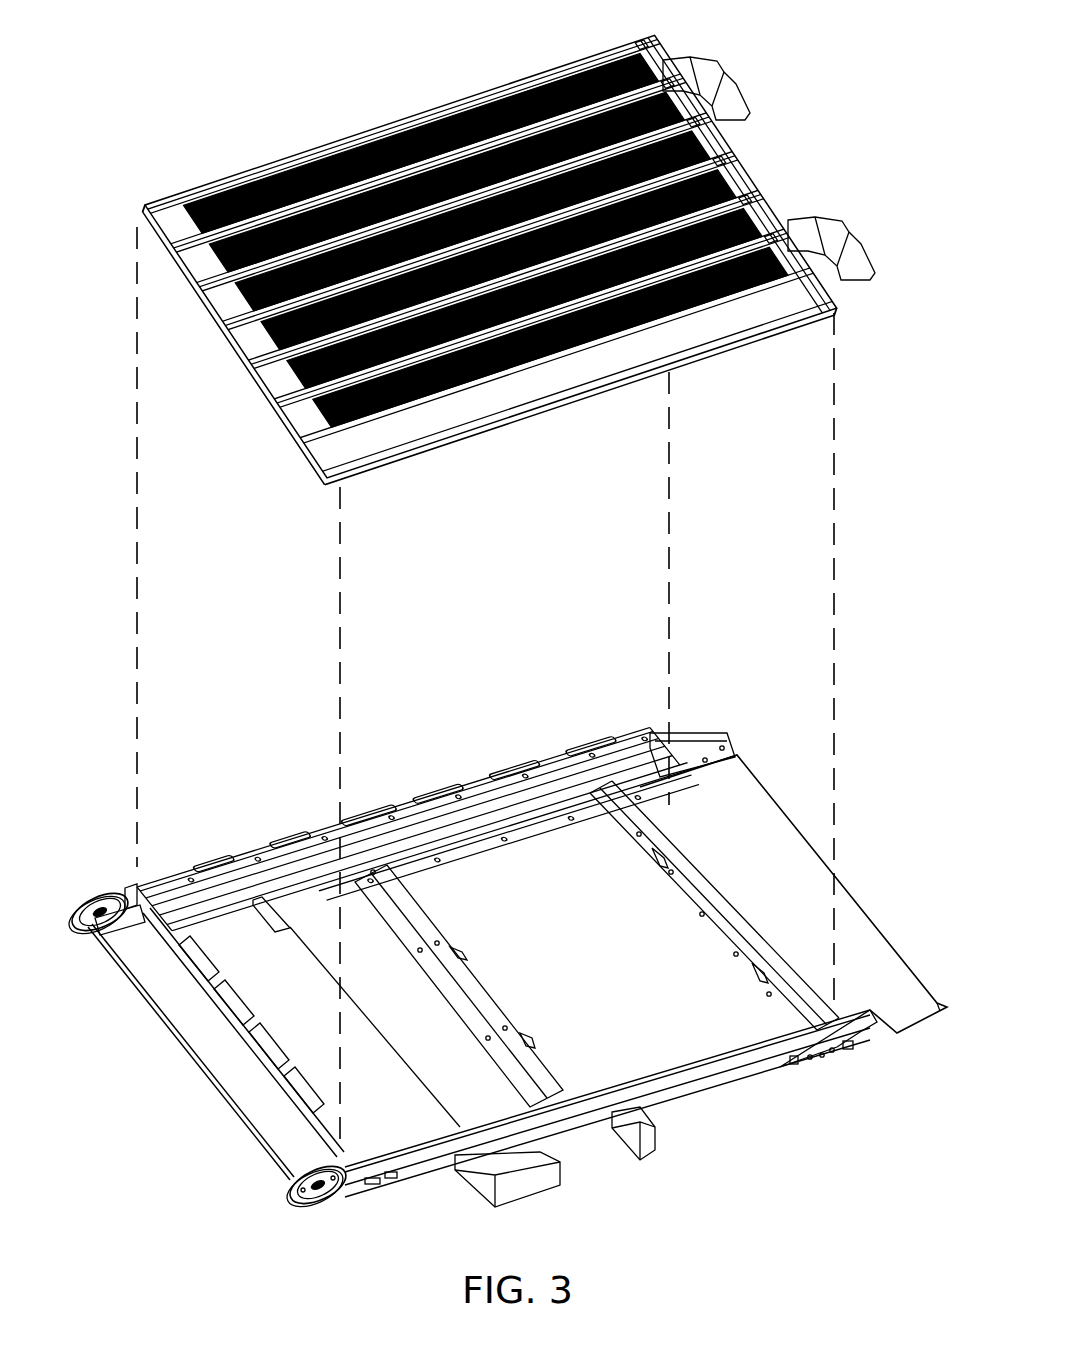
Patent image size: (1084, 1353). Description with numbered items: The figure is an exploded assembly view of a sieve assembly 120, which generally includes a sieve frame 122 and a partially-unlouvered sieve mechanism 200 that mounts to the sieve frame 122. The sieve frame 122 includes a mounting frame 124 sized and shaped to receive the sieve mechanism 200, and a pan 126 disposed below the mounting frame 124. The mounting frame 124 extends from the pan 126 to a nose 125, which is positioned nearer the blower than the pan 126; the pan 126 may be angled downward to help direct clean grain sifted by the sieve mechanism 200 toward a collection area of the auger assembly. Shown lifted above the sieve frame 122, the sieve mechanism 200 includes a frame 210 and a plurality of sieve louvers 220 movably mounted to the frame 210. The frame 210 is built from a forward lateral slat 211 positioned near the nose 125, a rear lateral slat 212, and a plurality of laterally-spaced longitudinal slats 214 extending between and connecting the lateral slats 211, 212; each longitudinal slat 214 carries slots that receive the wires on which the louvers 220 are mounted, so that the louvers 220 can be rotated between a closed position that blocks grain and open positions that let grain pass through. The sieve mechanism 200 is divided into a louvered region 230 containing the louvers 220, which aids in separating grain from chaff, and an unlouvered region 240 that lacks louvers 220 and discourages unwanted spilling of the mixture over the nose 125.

The sieve mechanism 200 is at (130, 36).
The frame 210 is at (316, 99).
The longitudinal slats 214 is at (477, 92).
The sieve louvers 220 is at (258, 188).
The rear lateral slat 212 is at (757, 191).
The forward lateral slat 211 is at (200, 305).
The louvered region 230 is at (350, 489).
The unlouvered region 240 is at (631, 420).
The sieve assembly 120 is at (871, 64).
The sieve frame 122 is at (121, 792).
The mounting frame 124 is at (497, 779).
The nose 125 is at (283, 1197).
The pan 126 is at (727, 1025).